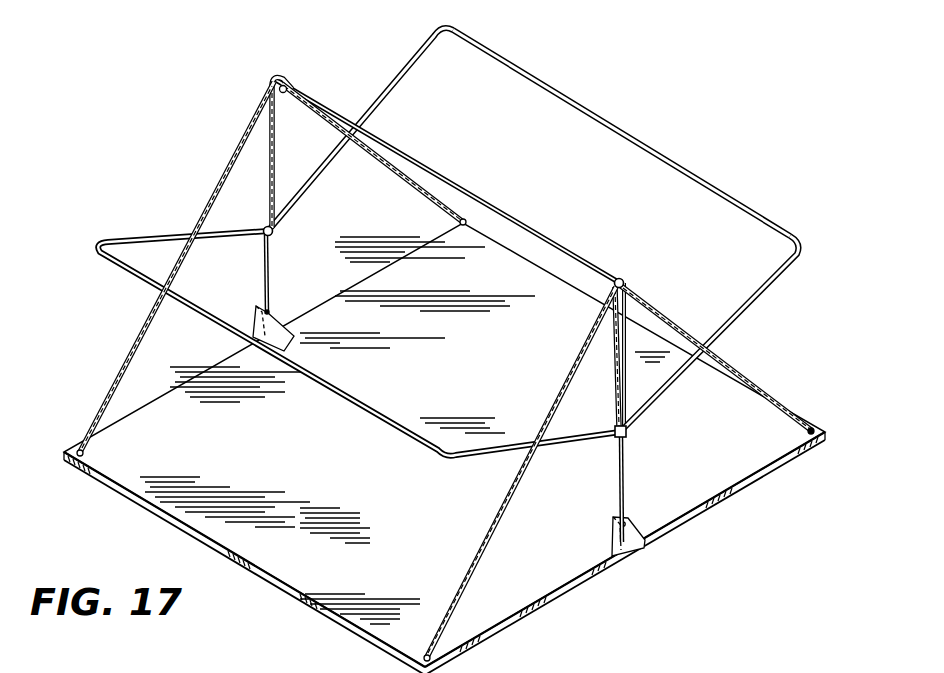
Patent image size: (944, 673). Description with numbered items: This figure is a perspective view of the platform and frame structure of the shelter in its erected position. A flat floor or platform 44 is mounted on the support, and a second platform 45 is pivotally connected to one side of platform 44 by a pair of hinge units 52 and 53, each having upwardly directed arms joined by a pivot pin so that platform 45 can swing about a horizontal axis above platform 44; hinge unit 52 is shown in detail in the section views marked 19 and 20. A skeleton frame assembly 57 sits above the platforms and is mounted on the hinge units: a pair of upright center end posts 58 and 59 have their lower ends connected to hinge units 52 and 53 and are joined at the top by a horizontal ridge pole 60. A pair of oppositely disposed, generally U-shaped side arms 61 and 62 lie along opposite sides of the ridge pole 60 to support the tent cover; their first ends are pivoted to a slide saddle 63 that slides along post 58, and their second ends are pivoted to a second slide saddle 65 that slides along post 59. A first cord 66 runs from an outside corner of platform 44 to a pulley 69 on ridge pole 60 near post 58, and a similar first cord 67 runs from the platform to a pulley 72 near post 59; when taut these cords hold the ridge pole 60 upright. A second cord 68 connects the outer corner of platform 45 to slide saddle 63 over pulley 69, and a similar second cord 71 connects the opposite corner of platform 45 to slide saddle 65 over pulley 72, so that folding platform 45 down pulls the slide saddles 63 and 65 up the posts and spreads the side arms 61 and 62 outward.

The platform 44 is at (142, 455).
The second platform 45 is at (752, 442).
The hinge unit 52 is at (647, 519).
The hinge unit 53 is at (283, 301).
The skeleton frame assembly 57 is at (533, 342).
The upright center end post 58 is at (626, 481).
The upright center end post 59 is at (264, 256).
The ridge pole 60 is at (507, 206).
The side arm 61 is at (646, 143).
The side arm 62 is at (145, 283).
The slide saddle 63 is at (627, 431).
The second slide saddle 65 is at (274, 230).
The first cord 66 is at (483, 545).
The first cord 67 is at (231, 165).
The second cord 68 is at (660, 313).
The pulley 69 is at (621, 277).
The second cord 71 is at (277, 133).
The pulley 72 is at (289, 86).
The section line 19 is at (228, 651).
The section line 20 is at (625, 215).